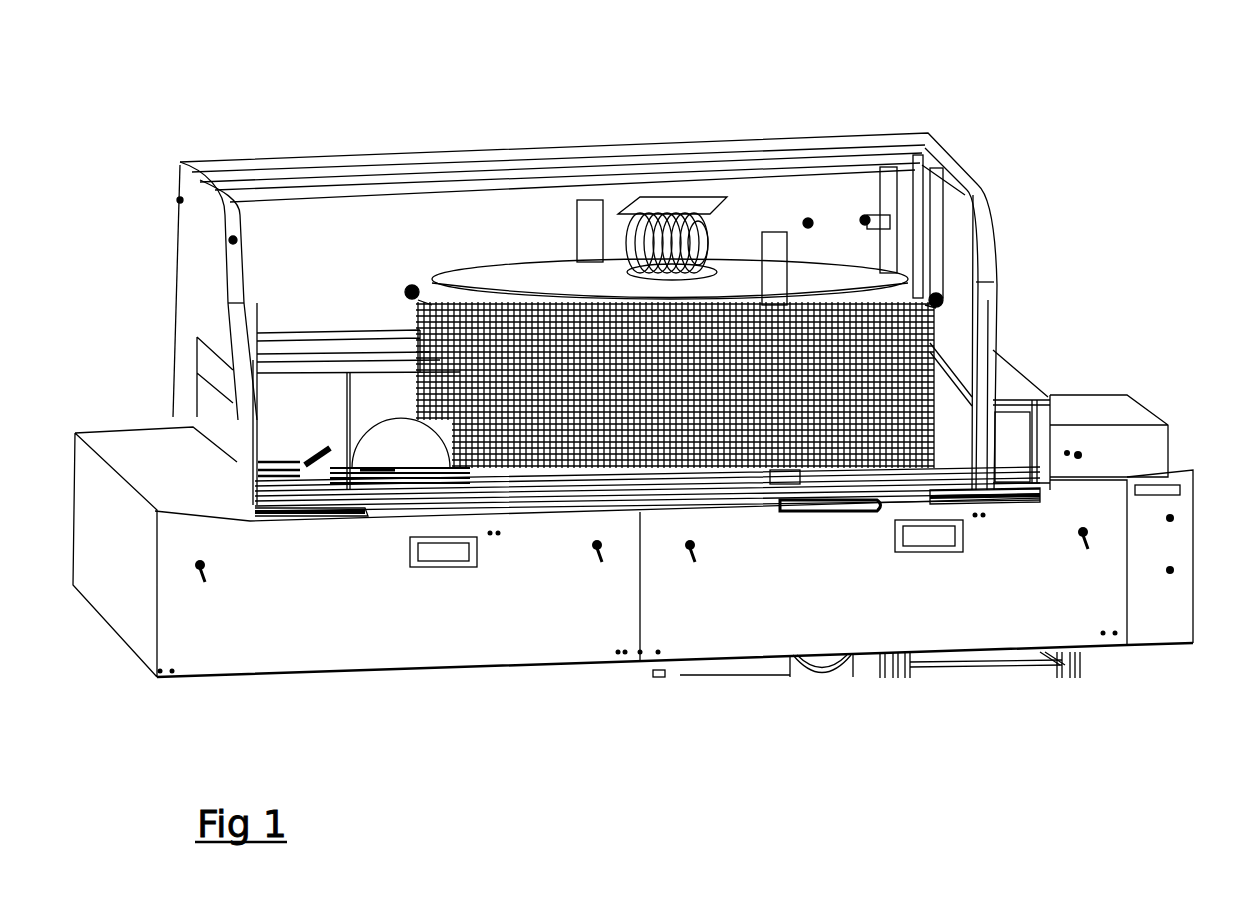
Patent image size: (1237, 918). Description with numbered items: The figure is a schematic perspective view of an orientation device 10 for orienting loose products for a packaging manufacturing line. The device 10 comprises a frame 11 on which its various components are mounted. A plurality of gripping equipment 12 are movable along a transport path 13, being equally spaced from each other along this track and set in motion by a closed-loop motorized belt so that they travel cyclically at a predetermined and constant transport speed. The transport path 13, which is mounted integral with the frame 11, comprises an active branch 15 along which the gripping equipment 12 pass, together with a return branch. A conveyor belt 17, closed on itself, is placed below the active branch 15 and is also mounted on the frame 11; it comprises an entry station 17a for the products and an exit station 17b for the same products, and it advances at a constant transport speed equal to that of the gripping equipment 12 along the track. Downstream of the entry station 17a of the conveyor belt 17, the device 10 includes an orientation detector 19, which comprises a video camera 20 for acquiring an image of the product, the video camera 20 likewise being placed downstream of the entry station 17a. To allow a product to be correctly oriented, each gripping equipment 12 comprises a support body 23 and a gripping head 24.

The orientation device 10 is at (103, 128).
The frame 11 is at (313, 353).
The gripping equipment 12 is at (410, 287).
The transport path 13 is at (543, 300).
The active branch 15 is at (745, 307).
The conveyor belt 17 is at (540, 505).
The entry station 17a is at (347, 517).
The exit station 17b is at (940, 483).
The orientation detector 19 is at (377, 462).
The video camera 20 is at (405, 442).
The support body 23 is at (755, 483).
The gripping head 24 is at (787, 480).